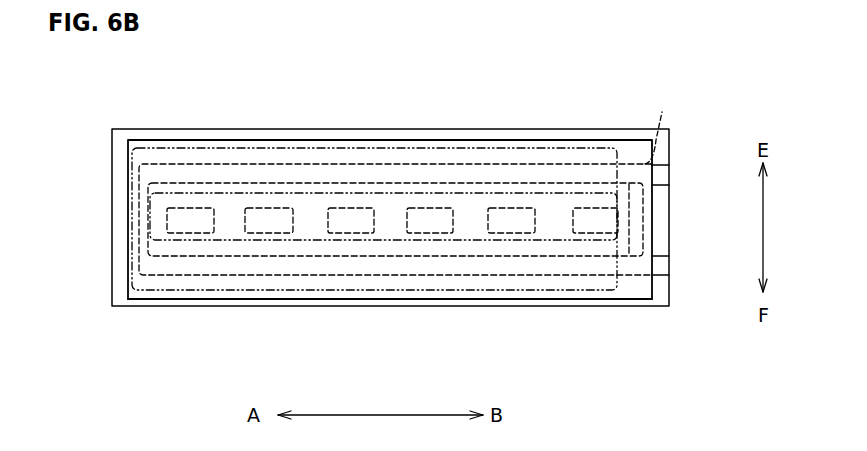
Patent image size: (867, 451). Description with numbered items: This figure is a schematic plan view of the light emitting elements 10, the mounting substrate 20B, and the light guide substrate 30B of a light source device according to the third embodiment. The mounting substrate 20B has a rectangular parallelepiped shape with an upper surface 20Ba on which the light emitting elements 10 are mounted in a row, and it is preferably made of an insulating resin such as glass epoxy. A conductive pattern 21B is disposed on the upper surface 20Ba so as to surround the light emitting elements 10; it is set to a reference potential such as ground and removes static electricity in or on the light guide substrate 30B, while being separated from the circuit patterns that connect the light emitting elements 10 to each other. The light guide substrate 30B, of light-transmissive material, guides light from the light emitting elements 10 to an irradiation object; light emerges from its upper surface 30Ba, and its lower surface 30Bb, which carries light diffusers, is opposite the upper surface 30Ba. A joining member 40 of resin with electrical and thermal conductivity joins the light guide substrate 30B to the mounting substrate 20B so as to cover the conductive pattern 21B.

The light emitting elements 10 is at (358, 212).
The mounting substrate 20B is at (388, 136).
The upper surface 20Ba is at (188, 140).
The conductive pattern 21B is at (660, 175).
The light guide substrate 30B is at (313, 300).
The upper surface 30Ba is at (457, 142).
The lower surface 30Bb is at (403, 300).
The joining member 40 is at (132, 178).